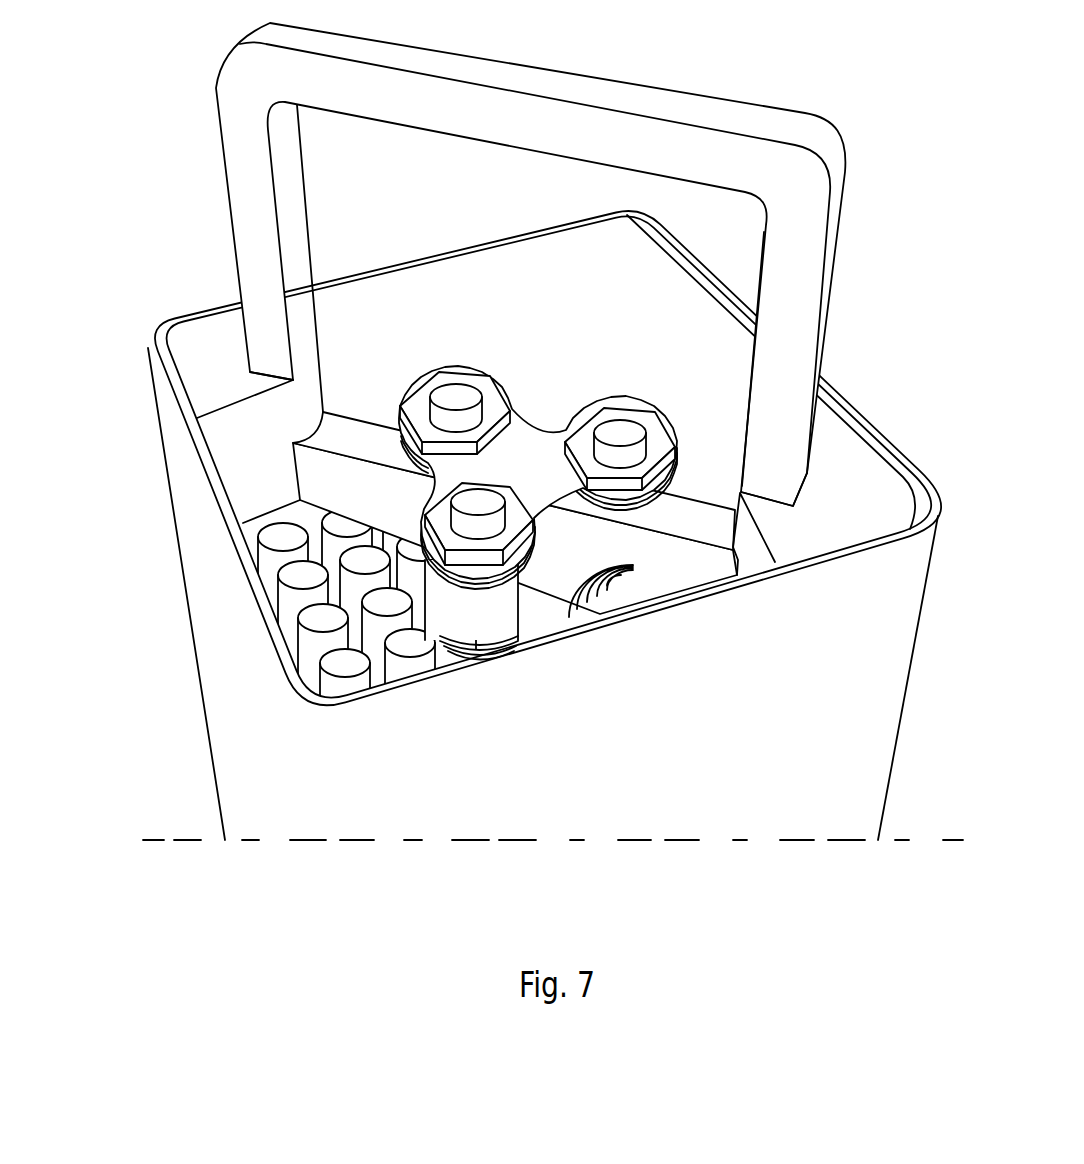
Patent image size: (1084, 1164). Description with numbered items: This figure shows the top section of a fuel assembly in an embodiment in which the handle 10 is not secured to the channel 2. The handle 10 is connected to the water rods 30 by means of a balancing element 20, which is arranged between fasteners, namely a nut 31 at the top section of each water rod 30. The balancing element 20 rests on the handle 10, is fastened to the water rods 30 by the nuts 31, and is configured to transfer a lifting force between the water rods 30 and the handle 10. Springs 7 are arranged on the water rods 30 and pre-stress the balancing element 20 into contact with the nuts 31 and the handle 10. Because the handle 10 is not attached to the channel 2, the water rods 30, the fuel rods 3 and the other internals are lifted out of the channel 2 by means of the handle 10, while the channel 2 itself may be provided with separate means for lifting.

The channel 2 is at (795, 801).
The fuel rods 3 is at (303, 577).
The springs 7 is at (610, 603).
The handle 10 is at (828, 148).
The balancing element 20 is at (543, 503).
The water rods 30 is at (620, 423).
The nut 31 is at (440, 520).